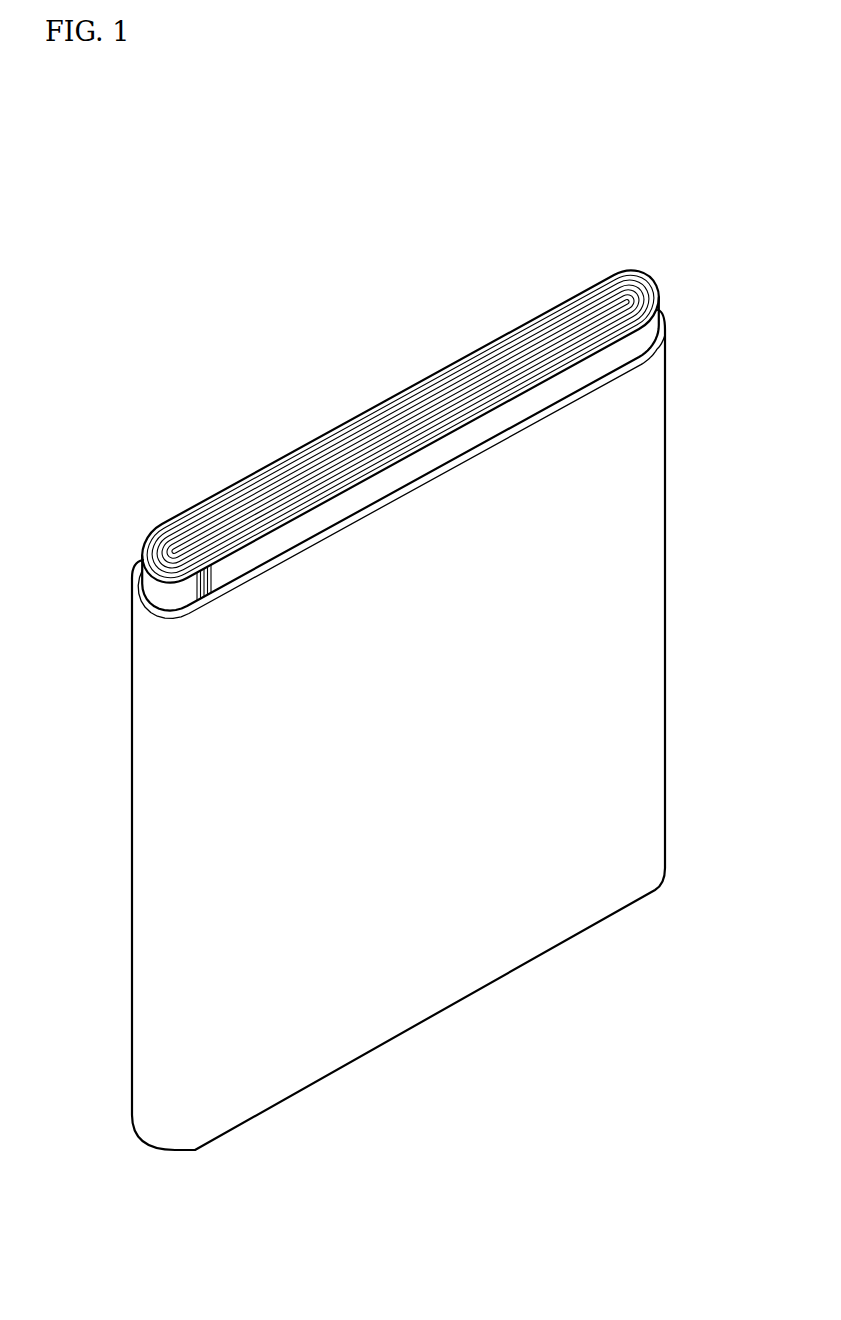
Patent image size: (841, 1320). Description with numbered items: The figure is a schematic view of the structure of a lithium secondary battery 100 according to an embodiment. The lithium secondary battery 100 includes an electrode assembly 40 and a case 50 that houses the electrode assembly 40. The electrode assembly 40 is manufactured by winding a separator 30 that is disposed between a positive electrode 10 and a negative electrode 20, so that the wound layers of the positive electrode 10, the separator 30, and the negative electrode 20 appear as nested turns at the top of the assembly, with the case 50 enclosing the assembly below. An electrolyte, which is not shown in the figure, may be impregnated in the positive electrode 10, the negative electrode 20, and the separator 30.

The lithium secondary battery 100 is at (383, 153).
The positive electrode 10 is at (657, 288).
The negative electrode 20 is at (618, 290).
The separator 30 is at (643, 280).
The electrode assembly 40 is at (371, 373).
The case 50 is at (652, 580).